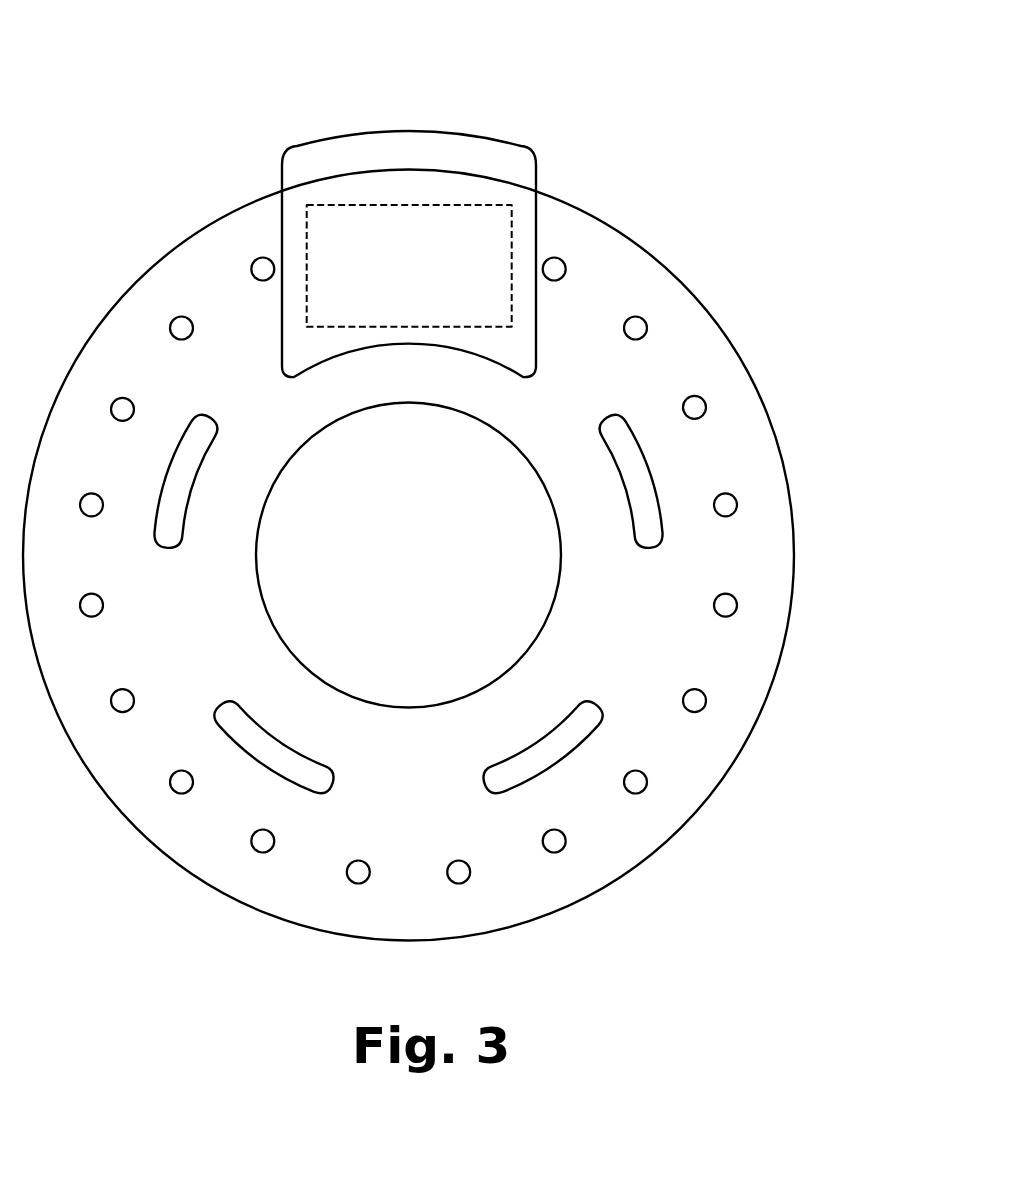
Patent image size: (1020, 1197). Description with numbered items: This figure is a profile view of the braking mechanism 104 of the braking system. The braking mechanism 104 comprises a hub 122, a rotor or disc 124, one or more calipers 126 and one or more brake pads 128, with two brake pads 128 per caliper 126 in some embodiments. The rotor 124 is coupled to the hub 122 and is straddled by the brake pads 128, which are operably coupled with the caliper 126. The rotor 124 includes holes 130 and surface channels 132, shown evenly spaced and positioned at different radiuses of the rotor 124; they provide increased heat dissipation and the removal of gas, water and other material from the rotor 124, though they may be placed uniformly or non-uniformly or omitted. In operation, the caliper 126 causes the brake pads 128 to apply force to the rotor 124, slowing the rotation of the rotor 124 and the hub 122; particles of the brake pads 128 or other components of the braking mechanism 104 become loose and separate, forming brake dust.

The braking mechanism 104 is at (462, 477).
The hub 122 is at (518, 584).
The rotor 124 is at (750, 442).
The caliper 126 is at (438, 150).
The brake pad 128 is at (512, 235).
The holes 130 is at (701, 396).
The surface channels 132 is at (592, 715).